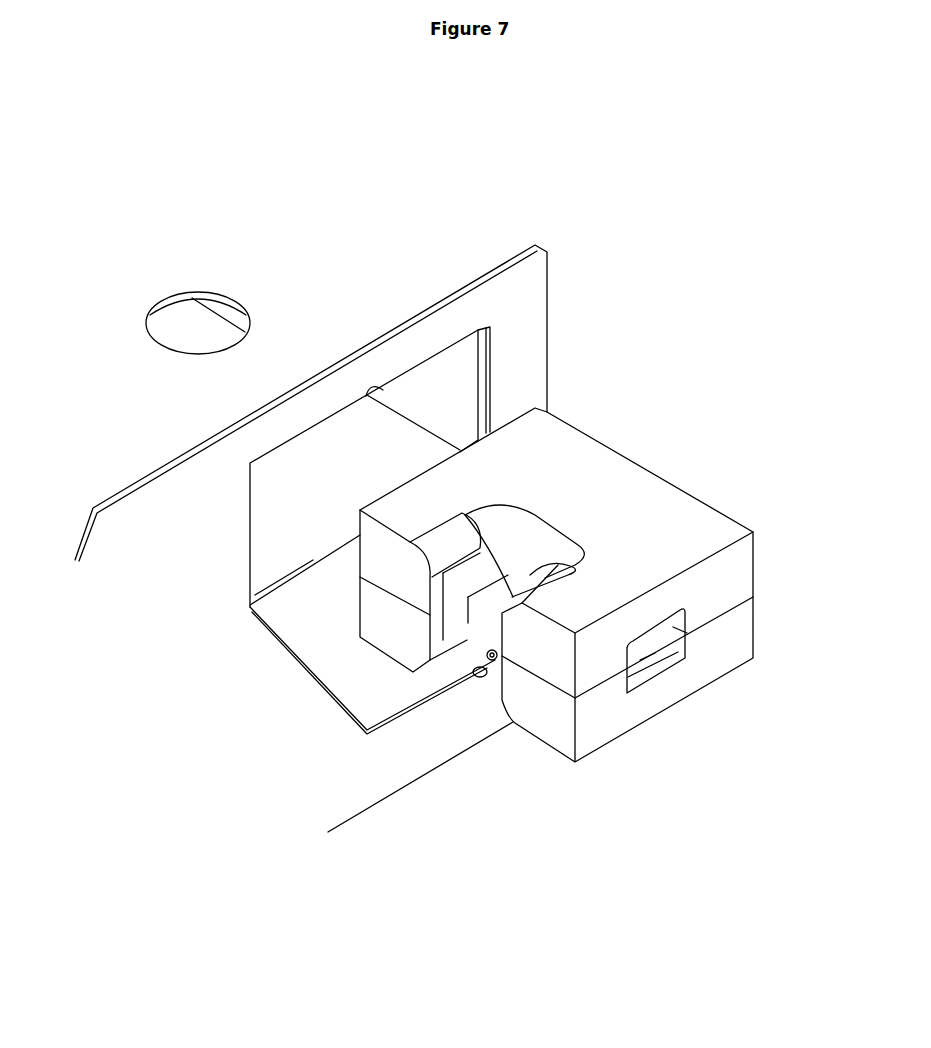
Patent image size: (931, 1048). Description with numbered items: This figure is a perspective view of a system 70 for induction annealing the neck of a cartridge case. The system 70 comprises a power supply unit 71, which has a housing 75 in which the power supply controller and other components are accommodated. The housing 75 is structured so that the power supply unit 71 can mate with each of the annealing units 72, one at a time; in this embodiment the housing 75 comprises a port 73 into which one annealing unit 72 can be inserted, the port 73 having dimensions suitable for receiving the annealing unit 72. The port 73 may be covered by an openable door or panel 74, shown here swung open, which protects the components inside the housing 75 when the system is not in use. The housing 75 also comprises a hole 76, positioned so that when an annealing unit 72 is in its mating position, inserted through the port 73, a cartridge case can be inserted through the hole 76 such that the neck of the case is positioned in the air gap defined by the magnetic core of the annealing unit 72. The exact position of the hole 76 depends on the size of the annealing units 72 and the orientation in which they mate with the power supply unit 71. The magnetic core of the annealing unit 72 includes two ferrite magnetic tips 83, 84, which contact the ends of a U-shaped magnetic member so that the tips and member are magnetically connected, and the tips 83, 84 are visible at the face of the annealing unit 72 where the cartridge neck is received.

The system 70 is at (670, 210).
The power supply unit 71 is at (388, 256).
The annealing unit 72 is at (697, 523).
The port 73 is at (448, 390).
The door or panel 74 is at (295, 622).
The housing 75 is at (528, 283).
The hole 76 is at (185, 325).
The magnetic tip 83 is at (460, 607).
The magnetic tip 84 is at (492, 660).